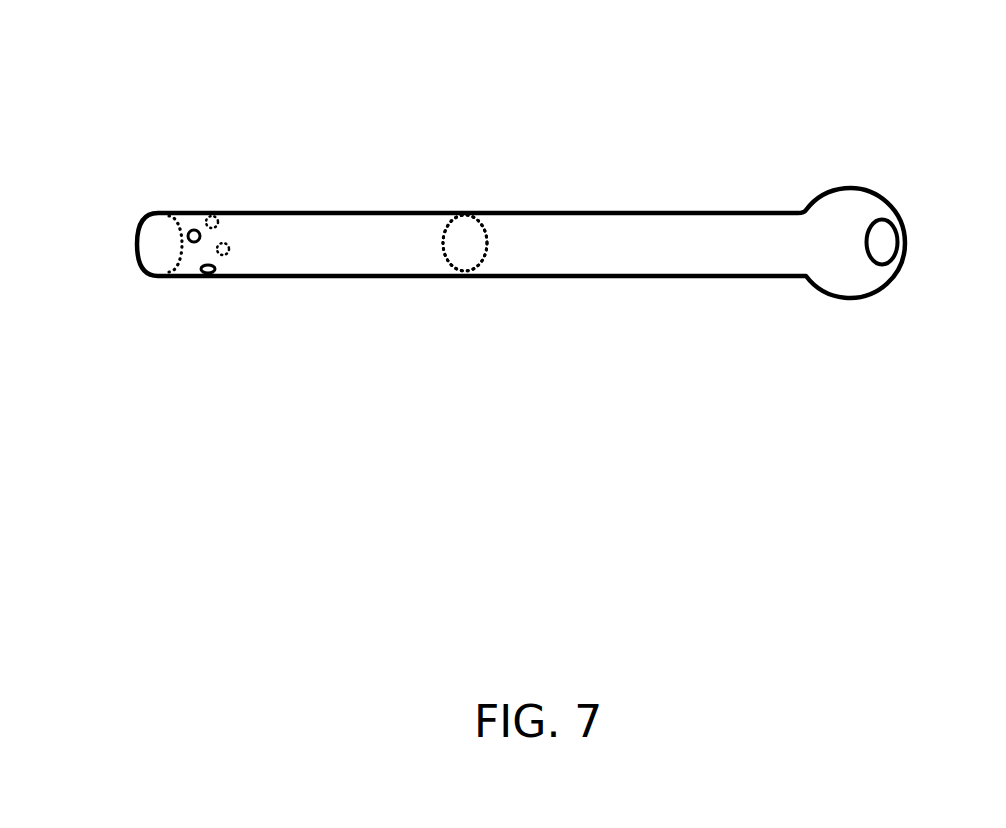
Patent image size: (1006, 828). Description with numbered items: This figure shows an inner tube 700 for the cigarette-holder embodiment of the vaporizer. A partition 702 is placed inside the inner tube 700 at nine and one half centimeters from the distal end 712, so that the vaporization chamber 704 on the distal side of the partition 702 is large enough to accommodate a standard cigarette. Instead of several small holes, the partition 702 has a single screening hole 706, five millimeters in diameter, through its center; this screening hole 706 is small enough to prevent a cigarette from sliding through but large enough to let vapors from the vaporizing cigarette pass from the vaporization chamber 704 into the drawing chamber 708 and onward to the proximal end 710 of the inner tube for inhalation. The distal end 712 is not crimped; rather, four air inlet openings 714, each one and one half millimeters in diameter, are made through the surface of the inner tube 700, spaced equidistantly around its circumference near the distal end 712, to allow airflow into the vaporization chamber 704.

The inner tube 700 is at (531, 256).
The partition 702 is at (445, 233).
The vaporization chamber 704 is at (302, 245).
The screening hole 706 is at (467, 247).
The drawing chamber 708 is at (622, 245).
The proximal end 710 is at (888, 250).
The distal end 712 is at (162, 277).
The air inlet openings 714 is at (191, 230).